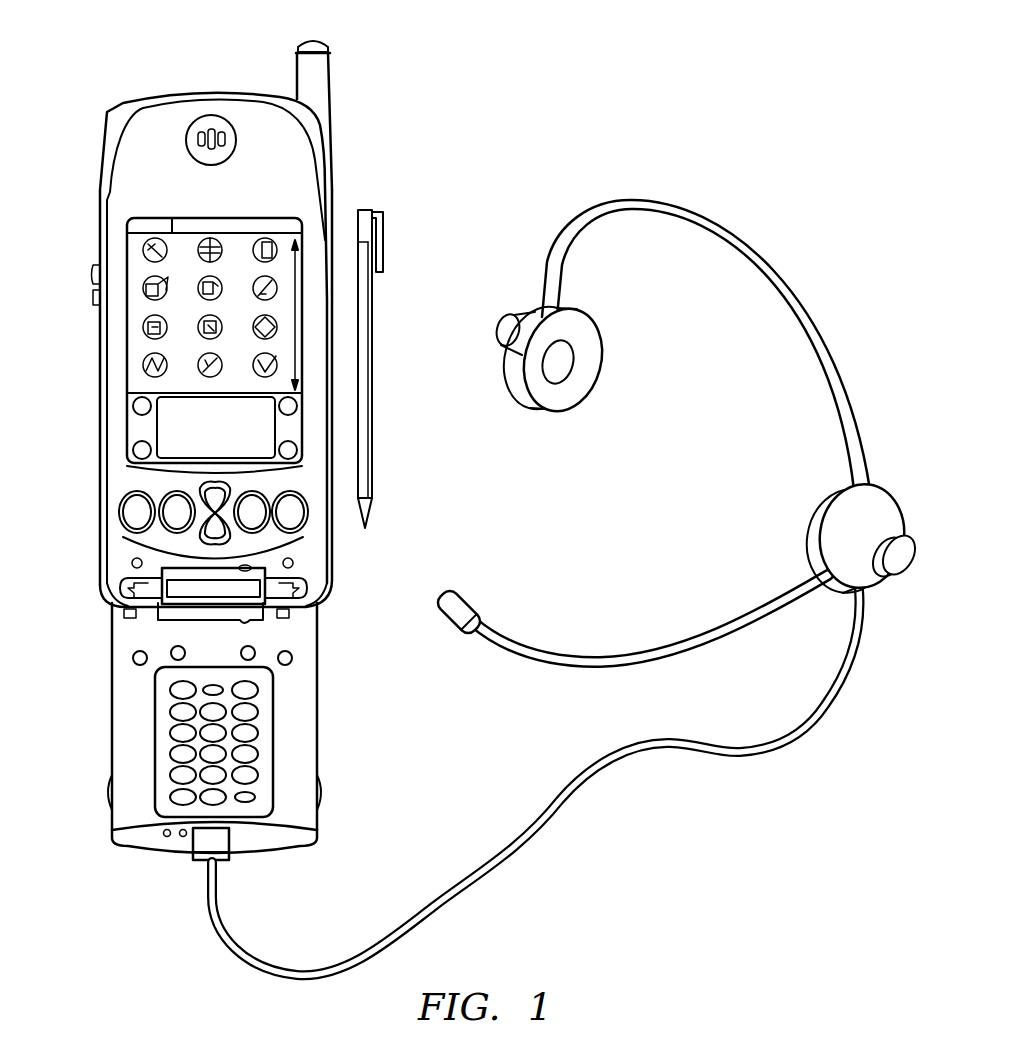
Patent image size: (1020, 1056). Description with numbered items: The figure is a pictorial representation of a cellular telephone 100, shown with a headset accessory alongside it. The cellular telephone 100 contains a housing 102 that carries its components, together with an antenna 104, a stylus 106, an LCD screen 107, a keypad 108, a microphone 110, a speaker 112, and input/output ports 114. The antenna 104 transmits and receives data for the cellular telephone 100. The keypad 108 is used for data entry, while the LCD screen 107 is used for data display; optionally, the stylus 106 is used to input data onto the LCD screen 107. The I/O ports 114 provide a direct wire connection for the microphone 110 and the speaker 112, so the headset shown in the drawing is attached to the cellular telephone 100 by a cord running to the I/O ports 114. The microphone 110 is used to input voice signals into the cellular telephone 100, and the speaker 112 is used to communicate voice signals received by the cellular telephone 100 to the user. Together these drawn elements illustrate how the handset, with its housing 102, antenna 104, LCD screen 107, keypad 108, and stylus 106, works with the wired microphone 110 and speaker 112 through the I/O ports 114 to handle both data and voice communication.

The cellular telephone 100 is at (520, 82).
The housing 102 is at (100, 230).
The antenna 104 is at (332, 82).
The stylus 106 is at (373, 343).
The LCD screen 107 is at (160, 217).
The keypad 108 is at (152, 733).
The microphone 110 is at (450, 594).
The speaker 112 is at (887, 502).
The input/output (I/O) ports 114 is at (183, 840).